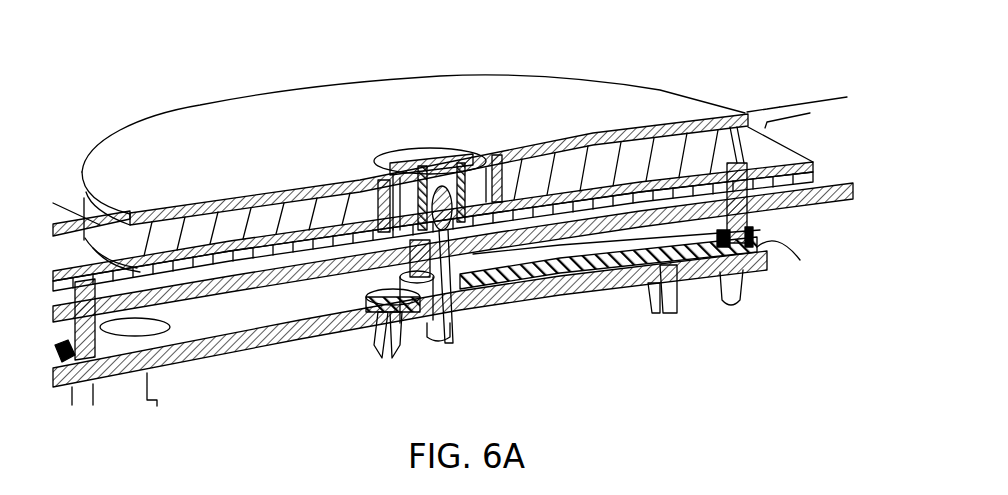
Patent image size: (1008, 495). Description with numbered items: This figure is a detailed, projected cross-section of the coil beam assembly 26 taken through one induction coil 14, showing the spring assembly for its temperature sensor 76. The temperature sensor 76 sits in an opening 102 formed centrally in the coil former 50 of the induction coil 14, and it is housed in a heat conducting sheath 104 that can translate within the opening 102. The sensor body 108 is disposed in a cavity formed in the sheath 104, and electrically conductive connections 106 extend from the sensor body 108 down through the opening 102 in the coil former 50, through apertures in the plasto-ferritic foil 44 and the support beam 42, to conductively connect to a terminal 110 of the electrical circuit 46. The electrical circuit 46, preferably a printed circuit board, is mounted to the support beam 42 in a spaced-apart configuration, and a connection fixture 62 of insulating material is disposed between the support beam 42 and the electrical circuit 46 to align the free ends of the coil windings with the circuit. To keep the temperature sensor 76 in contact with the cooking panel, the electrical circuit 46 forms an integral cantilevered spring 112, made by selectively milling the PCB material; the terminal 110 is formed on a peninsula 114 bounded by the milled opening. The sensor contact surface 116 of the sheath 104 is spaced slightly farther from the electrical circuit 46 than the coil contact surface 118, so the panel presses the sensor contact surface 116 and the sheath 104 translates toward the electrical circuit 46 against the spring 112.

The induction coil 14 is at (176, 92).
The coil beam assembly 26 is at (401, 146).
The support beam 42 is at (822, 200).
The plasto-ferritic foil 44 is at (818, 170).
The electrical circuit 46 is at (713, 277).
The cover plate 50 is at (618, 112).
The connection fixture 62 is at (767, 240).
The temperature sensor 76 is at (383, 147).
The opening 102 is at (412, 142).
The heat conducting sheath 104 is at (465, 160).
The electrically conductive connections 106 is at (443, 333).
The sensor body 108 is at (378, 182).
The terminal 110 is at (472, 335).
The cantilevered spring 112 is at (493, 307).
The peninsula 114 is at (461, 355).
The sensor contact surface 116 is at (425, 162).
The coil contact surface 118 is at (162, 190).